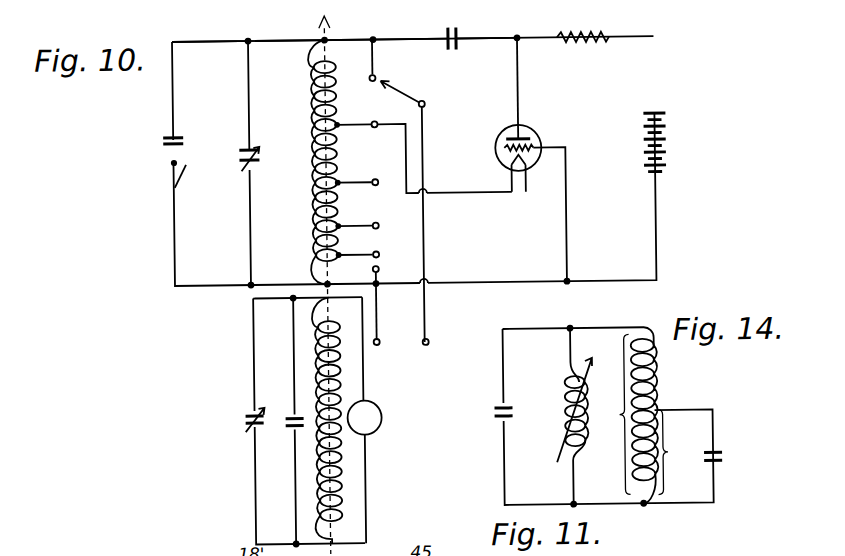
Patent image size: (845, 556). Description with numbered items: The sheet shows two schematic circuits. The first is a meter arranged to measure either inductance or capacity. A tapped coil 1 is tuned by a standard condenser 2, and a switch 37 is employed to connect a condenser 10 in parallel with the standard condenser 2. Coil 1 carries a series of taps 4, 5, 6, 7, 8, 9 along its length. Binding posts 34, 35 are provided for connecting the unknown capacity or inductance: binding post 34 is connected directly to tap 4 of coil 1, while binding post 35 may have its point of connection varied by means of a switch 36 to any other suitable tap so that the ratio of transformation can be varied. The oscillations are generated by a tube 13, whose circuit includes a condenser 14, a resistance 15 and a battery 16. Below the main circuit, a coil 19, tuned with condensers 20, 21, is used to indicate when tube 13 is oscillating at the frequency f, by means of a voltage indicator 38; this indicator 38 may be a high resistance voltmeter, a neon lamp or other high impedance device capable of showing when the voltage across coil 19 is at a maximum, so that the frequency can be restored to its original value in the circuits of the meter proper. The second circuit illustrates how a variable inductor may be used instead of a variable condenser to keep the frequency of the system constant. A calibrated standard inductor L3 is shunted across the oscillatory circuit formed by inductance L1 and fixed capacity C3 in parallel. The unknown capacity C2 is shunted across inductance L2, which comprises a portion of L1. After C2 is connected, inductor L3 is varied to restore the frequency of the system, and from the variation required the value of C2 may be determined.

In FIG. 10, the coil 1 is at (315, 162).
In FIG. 10, the standard condenser 2 is at (244, 154).
In FIG. 10, the tap 4 is at (383, 270).
In FIG. 10, the tap 5 is at (359, 244).
In FIG. 10, the tap 6 is at (359, 215).
In FIG. 10, the tap 7 is at (357, 172).
In FIG. 10, the tap 8 is at (423, 147).
In FIG. 10, the tap 9 is at (366, 64).
In FIG. 10, the condenser 10 is at (163, 137).
In FIG. 10, the tube 13 is at (532, 159).
In FIG. 10, the condenser 14 is at (459, 35).
In FIG. 10, the resistance 15 is at (583, 25).
In FIG. 10, the battery 16 is at (671, 142).
In FIG. 10, the coil 19 is at (317, 405).
In FIG. 10, the condenser 20 is at (284, 432).
In FIG. 10, the condenser 21 is at (246, 414).
In FIG. 10, the binding post 34 is at (377, 347).
In FIG. 10, the binding post 35 is at (425, 345).
In FIG. 10, the switch 36 is at (428, 104).
In FIG. 10, the switch 37 is at (168, 175).
In FIG. 10, the voltage indicator 38 is at (379, 421).
In FIG. 14, the unknown capacity C2 is at (728, 467).
In FIG. 14, the fixed capacity C3 is at (486, 419).
In FIG. 14, the inductance L1 is at (626, 419).
In FIG. 14, the inductance L2 is at (674, 451).
In FIG. 14, the calibrated standard inductor L3 is at (565, 416).